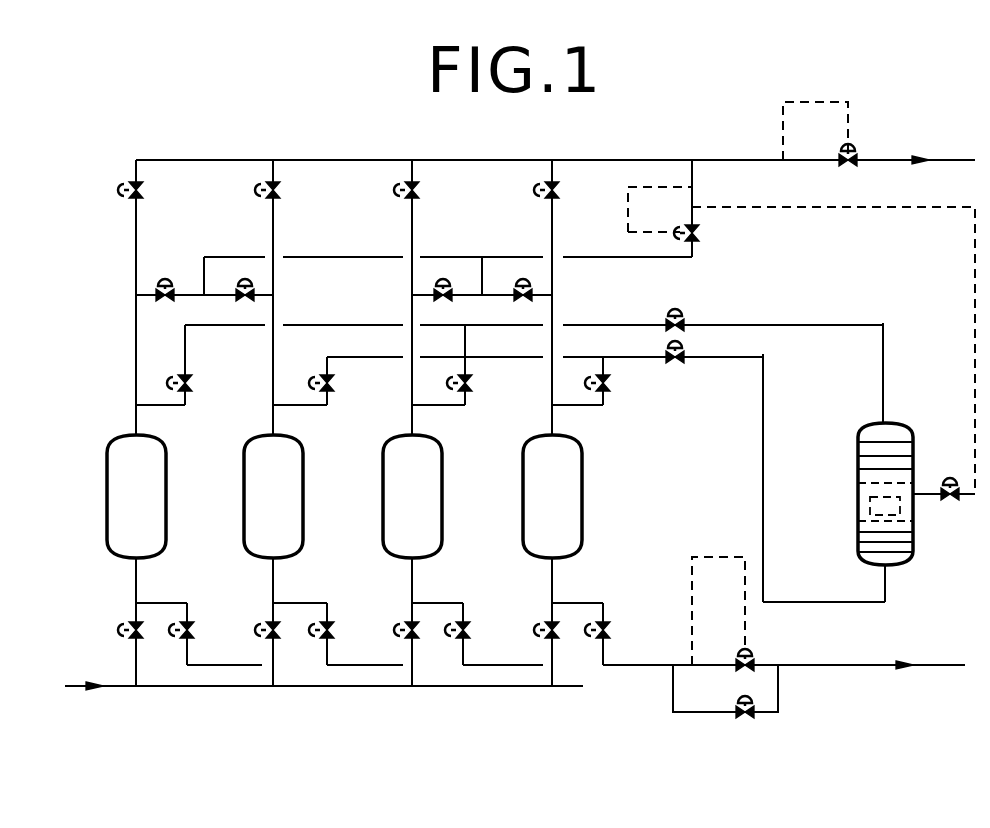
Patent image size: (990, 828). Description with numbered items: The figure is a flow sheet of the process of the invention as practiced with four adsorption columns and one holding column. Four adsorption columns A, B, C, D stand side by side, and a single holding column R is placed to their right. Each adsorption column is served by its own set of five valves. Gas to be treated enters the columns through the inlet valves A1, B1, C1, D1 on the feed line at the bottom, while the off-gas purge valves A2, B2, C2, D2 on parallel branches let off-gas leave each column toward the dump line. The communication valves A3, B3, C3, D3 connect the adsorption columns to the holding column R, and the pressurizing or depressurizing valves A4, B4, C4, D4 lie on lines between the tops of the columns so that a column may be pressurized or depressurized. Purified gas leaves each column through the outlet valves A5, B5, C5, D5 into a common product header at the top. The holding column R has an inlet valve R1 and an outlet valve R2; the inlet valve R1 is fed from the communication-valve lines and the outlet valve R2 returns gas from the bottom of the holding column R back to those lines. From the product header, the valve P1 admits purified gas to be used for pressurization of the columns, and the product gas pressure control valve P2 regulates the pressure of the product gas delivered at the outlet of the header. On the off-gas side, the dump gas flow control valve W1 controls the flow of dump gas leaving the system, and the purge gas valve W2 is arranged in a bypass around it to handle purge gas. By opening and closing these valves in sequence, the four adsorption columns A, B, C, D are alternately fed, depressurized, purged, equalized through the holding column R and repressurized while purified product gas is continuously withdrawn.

The adsorption column A is at (136, 496).
The adsorption column B is at (273, 496).
The adsorption column C is at (412, 496).
The adsorption column D is at (552, 496).
The holding column R is at (898, 494).
The inlet valve for gas to be treated A1 is at (110, 633).
The off-gas purge valve A2 is at (203, 617).
The communication valve to holding column A3 is at (199, 384).
The pressurizing or depressurizing valve A4 is at (164, 270).
The outlet valve for purified gases A5 is at (150, 191).
The inlet valve for gas to be treated B1 is at (252, 645).
The off-gas purge valve B2 is at (342, 617).
The communication valve to holding column B3 is at (342, 384).
The pressurizing or depressurizing valve B4 is at (276, 294).
The outlet valve for purified gases B5 is at (287, 191).
The inlet valve for gas to be treated C1 is at (390, 645).
The off-gas purge valve C2 is at (477, 617).
The communication valve to holding column C3 is at (480, 384).
The pressurizing or depressurizing valve C4 is at (408, 294).
The outlet valve for purified gases C5 is at (427, 191).
The inlet valve for gas to be treated D1 is at (531, 645).
The off-gas purge valve D2 is at (619, 617).
The communication valve to holding column D3 is at (619, 392).
The pressurizing or depressurizing valve D4 is at (557, 294).
The outlet valve for purified gases D5 is at (568, 191).
The valve for purified gas to be used for pressurization P1 is at (705, 235).
The product gas pressure control valve P2 is at (848, 171).
The inlet valve of the holding column R1 is at (679, 301).
The outlet valve of the holding column R2 is at (685, 368).
The dump gas flow control valve W1 is at (769, 651).
The purge gas valve W2 is at (749, 723).